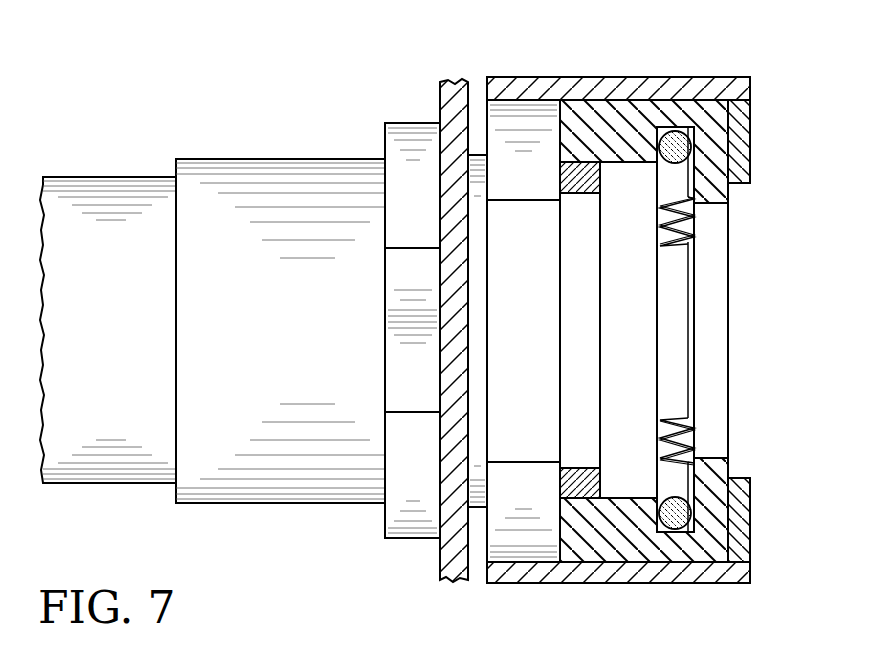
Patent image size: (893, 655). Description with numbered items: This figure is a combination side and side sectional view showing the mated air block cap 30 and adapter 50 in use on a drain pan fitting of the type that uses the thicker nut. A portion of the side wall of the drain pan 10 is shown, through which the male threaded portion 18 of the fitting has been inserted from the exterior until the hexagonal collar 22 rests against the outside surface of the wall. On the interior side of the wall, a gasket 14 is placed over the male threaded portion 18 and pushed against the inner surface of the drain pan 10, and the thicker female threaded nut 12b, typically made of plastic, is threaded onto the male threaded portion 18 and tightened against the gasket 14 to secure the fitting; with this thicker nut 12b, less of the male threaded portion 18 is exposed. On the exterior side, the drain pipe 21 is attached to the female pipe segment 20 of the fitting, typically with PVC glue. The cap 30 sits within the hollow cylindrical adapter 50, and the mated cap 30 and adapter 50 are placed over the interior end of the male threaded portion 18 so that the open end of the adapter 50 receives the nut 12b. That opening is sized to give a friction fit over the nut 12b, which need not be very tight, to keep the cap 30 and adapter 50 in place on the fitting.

The drain pan 10 is at (452, 108).
The female threaded nut 12b is at (537, 533).
The gasket 14 is at (473, 160).
The male threaded portion 18 is at (584, 188).
The female pipe segment 20 is at (302, 164).
The drain pipe 21 is at (134, 188).
The hexagonal collar 22 is at (396, 141).
The air block cap 30 is at (718, 470).
The adapter 50 is at (745, 535).